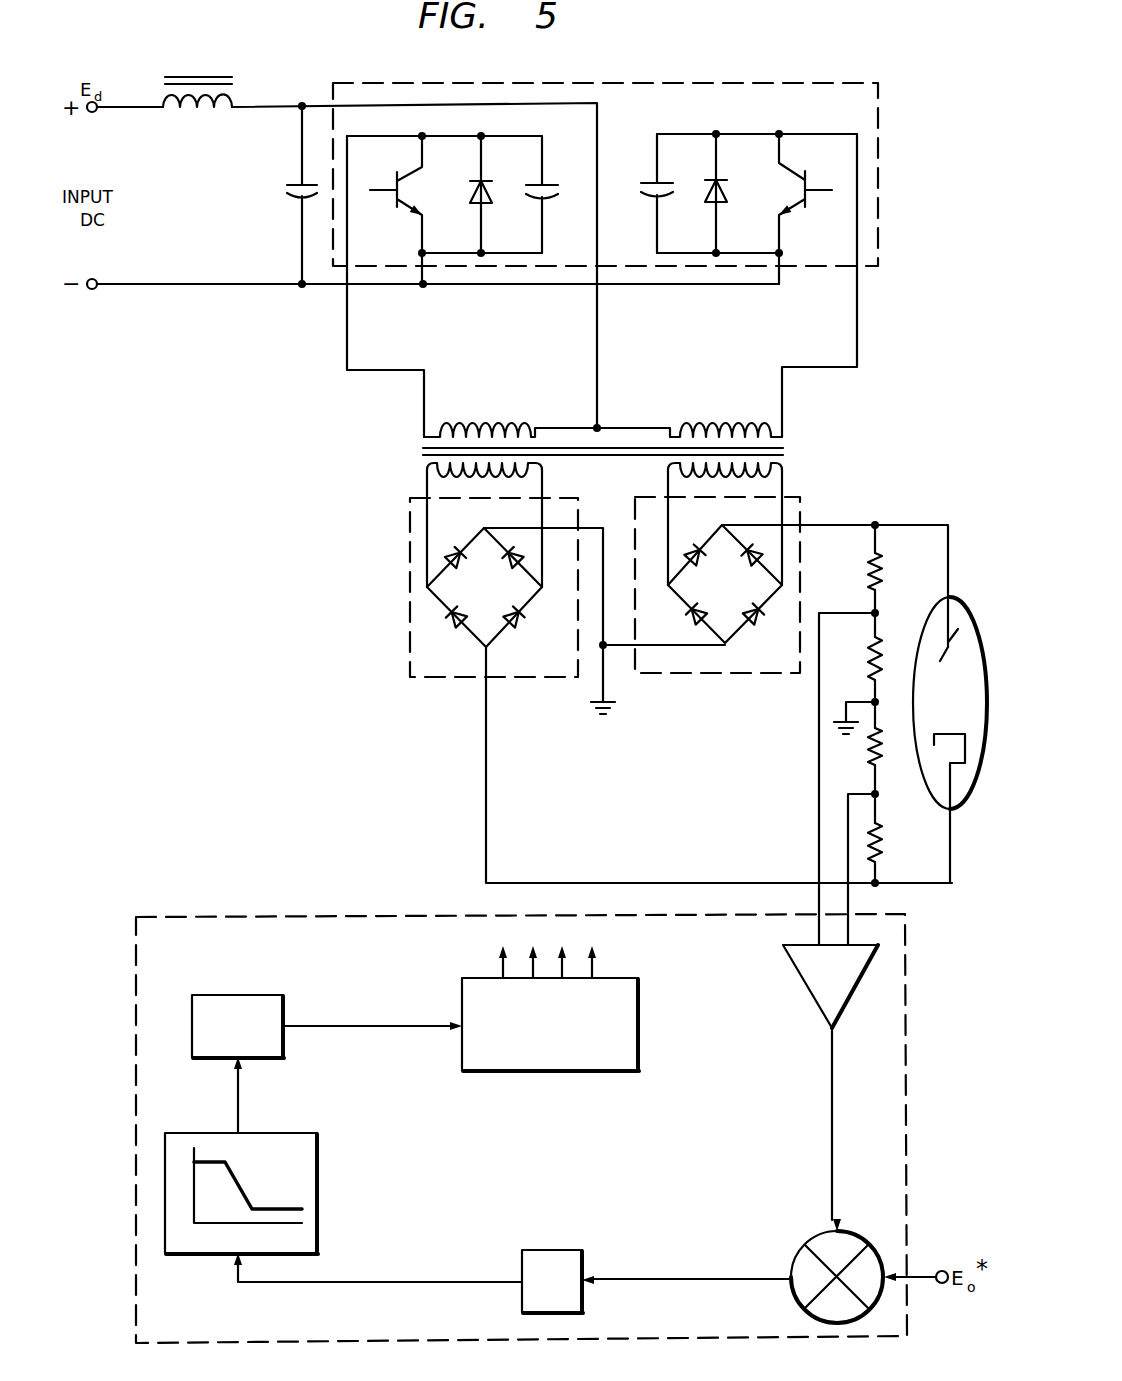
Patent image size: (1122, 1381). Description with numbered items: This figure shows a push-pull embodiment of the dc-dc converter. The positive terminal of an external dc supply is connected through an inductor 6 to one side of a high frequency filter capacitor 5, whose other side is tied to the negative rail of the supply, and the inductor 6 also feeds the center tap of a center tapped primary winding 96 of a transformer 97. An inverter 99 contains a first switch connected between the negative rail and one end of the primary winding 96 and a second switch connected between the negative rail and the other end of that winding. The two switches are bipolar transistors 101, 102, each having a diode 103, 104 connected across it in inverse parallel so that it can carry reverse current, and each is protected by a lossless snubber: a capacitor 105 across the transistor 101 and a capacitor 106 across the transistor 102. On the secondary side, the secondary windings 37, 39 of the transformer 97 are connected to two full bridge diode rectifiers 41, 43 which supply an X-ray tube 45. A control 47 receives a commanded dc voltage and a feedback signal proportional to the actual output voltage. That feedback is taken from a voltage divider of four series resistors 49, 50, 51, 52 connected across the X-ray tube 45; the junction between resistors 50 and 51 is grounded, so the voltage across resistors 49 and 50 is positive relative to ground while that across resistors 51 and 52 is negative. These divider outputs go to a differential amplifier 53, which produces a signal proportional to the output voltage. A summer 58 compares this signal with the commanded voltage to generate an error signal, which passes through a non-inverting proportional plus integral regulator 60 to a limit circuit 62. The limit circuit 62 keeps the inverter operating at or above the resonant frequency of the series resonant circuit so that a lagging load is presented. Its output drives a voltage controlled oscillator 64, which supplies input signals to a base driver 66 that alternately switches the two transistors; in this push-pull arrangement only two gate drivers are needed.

The high frequency filter capacitor 5 is at (287, 188).
The inductor 6 is at (213, 77).
The inverter 99 is at (806, 82).
The bipolar transistor 101 is at (384, 174).
The bipolar transistor 102 is at (818, 192).
The diode 103 is at (466, 187).
The diode 104 is at (730, 192).
The capacitor 105 is at (563, 190).
The capacitor 106 is at (646, 196).
The center tapped primary winding 96 is at (678, 421).
The transformer 97 is at (790, 451).
The secondary winding 37 is at (426, 464).
The secondary winding 39 is at (784, 462).
The full bridge diode rectifier 41 is at (410, 569).
The full bridge diode rectifier 43 is at (633, 540).
The X-ray tube 45 is at (956, 598).
The control 47 is at (906, 980).
The resistor 49 is at (878, 575).
The resistor 50 is at (867, 662).
The resistor 51 is at (877, 767).
The resistor 52 is at (882, 851).
The differential amplifier 53 is at (850, 1000).
The summer 58 is at (801, 1250).
The proportional plus integral regulator 60 is at (545, 1250).
The limit circuit 62 is at (317, 1166).
The voltage controlled oscillator 64 is at (226, 995).
The base driver 66 is at (640, 988).